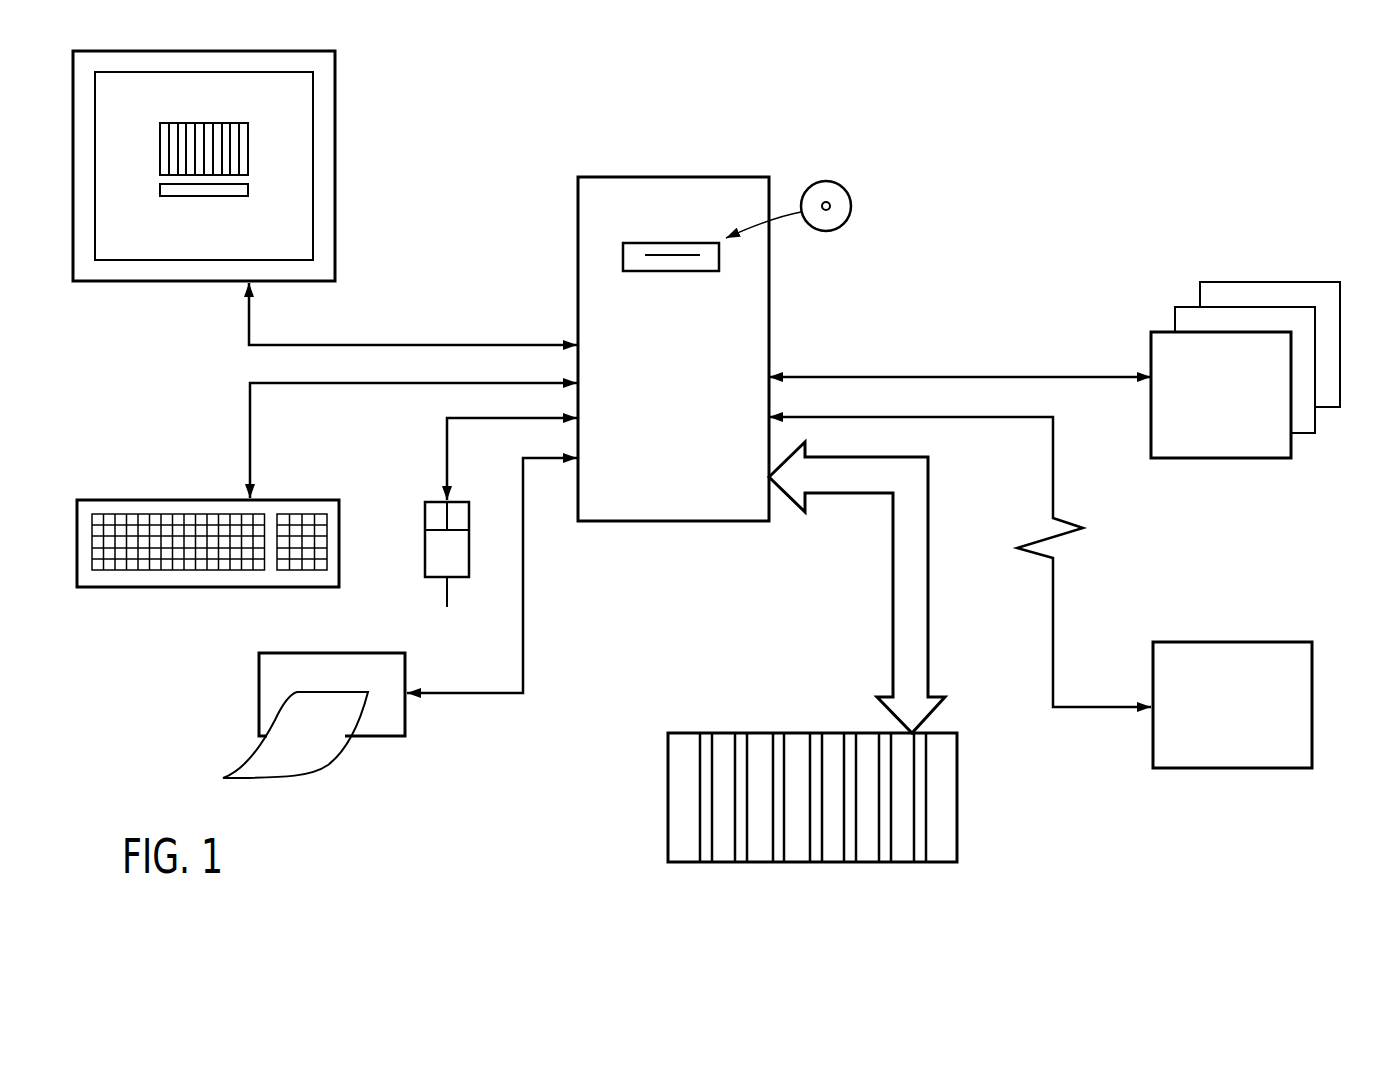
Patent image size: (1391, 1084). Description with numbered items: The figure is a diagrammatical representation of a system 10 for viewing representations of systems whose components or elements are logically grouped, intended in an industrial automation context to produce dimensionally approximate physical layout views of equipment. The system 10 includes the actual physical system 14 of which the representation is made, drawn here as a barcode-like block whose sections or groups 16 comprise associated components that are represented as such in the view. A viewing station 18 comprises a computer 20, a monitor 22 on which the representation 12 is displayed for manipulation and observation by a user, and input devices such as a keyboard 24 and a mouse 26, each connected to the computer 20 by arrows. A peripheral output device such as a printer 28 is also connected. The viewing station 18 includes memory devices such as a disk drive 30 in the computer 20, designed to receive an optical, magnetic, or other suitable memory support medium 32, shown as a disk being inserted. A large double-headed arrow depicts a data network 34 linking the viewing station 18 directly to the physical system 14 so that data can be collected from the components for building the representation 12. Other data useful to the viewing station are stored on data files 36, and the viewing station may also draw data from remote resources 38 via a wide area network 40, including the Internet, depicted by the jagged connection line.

The system 10 is at (470, 829).
The representation 12 is at (298, 150).
The physical system 14 is at (812, 837).
The sections or groups 16 is at (693, 862).
The viewing station 18 is at (747, 294).
The computer 20 is at (673, 177).
The monitor 22 is at (244, 196).
The keyboard 24 is at (157, 587).
The mouse 26 is at (447, 572).
The printer 28 is at (407, 718).
The disk drive 30 is at (720, 262).
The memory support medium 32 is at (841, 226).
The data network 34 is at (893, 596).
The data files 36 is at (1293, 442).
The remote resources 38 is at (1313, 706).
The wide area network 40 is at (1055, 633).